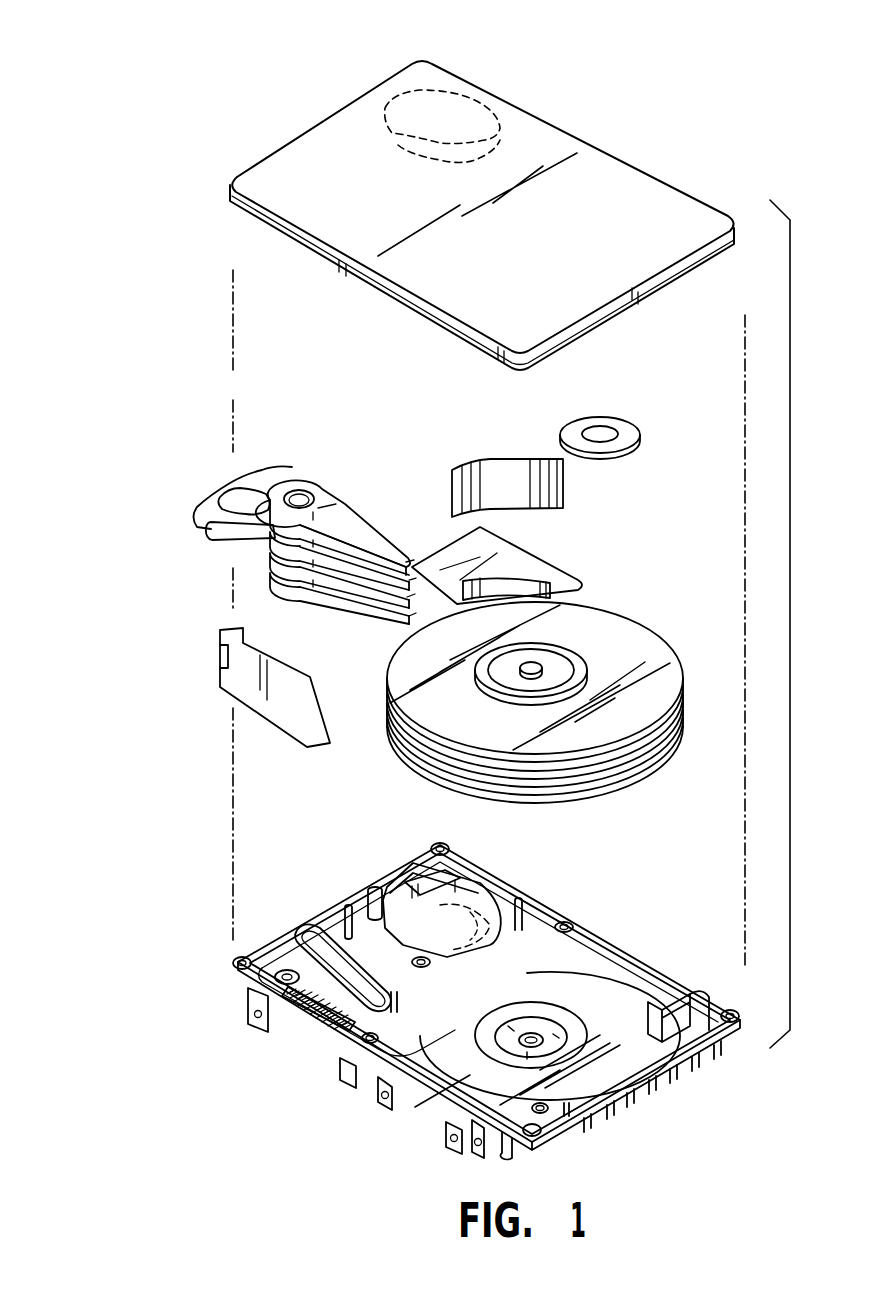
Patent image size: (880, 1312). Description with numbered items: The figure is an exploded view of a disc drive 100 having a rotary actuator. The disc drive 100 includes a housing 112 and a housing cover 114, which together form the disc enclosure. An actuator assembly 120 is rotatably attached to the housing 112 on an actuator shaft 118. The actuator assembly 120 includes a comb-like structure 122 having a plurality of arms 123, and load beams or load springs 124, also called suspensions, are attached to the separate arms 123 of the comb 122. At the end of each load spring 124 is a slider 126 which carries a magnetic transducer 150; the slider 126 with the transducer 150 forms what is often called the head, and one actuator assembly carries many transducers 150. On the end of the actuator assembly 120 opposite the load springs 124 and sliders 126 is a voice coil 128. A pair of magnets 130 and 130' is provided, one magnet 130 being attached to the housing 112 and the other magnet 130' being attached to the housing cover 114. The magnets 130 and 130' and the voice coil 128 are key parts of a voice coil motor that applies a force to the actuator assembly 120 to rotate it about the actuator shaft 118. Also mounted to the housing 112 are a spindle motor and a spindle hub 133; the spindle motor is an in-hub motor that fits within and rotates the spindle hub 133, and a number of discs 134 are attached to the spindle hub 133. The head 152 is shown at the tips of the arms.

The disc drive 100 is at (612, 104).
The housing 112 is at (613, 945).
The housing cover 114 is at (632, 192).
The actuator shaft 118 is at (302, 492).
The actuator assembly 120 is at (252, 547).
The comb-like structure 122 is at (323, 597).
The arms 123 is at (347, 510).
The load springs 124 is at (365, 537).
The slider 126 is at (407, 563).
The voice coil 128 is at (213, 497).
The magnet 130 is at (413, 890).
The magnet 130' is at (400, 94).
The spindle hub 133 is at (540, 663).
The discs 134 is at (650, 647).
The magnetic transducer 150 is at (428, 566).
The read/write head 152 is at (407, 620).